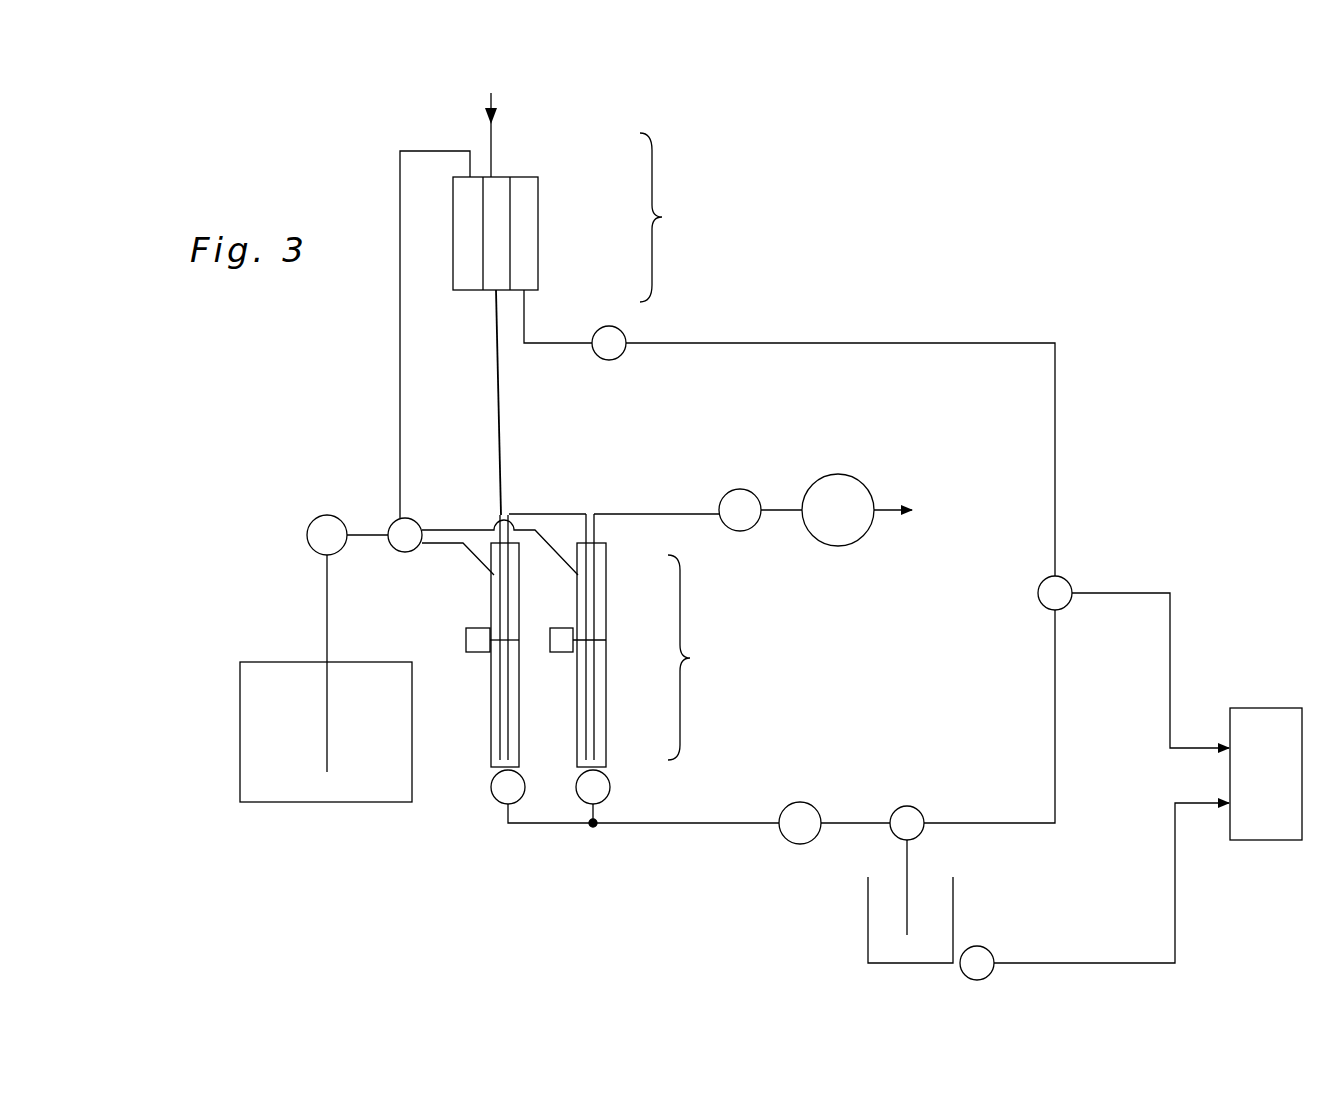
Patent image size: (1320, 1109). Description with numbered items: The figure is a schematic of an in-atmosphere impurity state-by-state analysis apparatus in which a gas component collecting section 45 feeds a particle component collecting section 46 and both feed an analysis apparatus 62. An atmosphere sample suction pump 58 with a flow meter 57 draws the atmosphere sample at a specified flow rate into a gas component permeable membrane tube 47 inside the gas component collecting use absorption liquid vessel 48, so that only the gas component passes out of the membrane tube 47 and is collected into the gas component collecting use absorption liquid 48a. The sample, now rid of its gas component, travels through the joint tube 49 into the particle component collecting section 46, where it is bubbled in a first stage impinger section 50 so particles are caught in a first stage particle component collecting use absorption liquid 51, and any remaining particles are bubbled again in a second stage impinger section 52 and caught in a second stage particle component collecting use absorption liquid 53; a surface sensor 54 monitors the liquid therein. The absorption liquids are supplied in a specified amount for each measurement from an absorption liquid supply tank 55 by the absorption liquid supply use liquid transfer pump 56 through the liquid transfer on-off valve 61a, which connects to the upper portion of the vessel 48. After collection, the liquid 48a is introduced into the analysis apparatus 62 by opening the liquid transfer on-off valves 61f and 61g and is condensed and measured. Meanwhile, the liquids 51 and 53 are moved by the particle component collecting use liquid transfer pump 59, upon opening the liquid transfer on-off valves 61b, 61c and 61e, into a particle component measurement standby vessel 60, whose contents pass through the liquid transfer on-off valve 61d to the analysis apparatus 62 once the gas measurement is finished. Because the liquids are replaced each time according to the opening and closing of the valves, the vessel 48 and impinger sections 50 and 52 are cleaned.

The gas component collecting section 45 is at (676, 217).
The particle component collecting section 46 is at (704, 657).
The gas component permeable membrane tube 47 is at (527, 150).
The gas component collecting use absorption liquid vessel 48 is at (538, 190).
The gas component collecting use absorption liquid 48a is at (528, 247).
The joint tube 49 is at (500, 400).
The first stage impinger section 50 is at (491, 596).
The first stage particle component collecting use absorption liquid 51 is at (491, 735).
The second stage impinger section 52 is at (607, 600).
The second stage particle component collecting use absorption liquid 53 is at (577, 722).
The surface sensor 54 is at (555, 628).
The absorption liquid supply tank 55 is at (240, 680).
The absorption liquid supply use liquid transfer pump 56 is at (330, 515).
The flow meter 57 is at (753, 528).
The atmosphere sample suction pump 58 is at (862, 537).
The particle component collecting use liquid transfer pump 59 is at (800, 802).
The particle component measurement standby vessel 60 is at (866, 922).
The liquid transfer on-off valve 61a is at (412, 518).
The liquid transfer on-off valve 61b is at (491, 790).
The liquid transfer on-off valve 61c is at (576, 787).
The liquid transfer on-off valve 61d is at (990, 950).
The liquid transfer on-off valve 61e is at (913, 806).
The liquid transfer on-off valve 61f is at (618, 360).
The liquid transfer on-off valve 61g is at (1066, 580).
The analysis apparatus 62 is at (1263, 708).